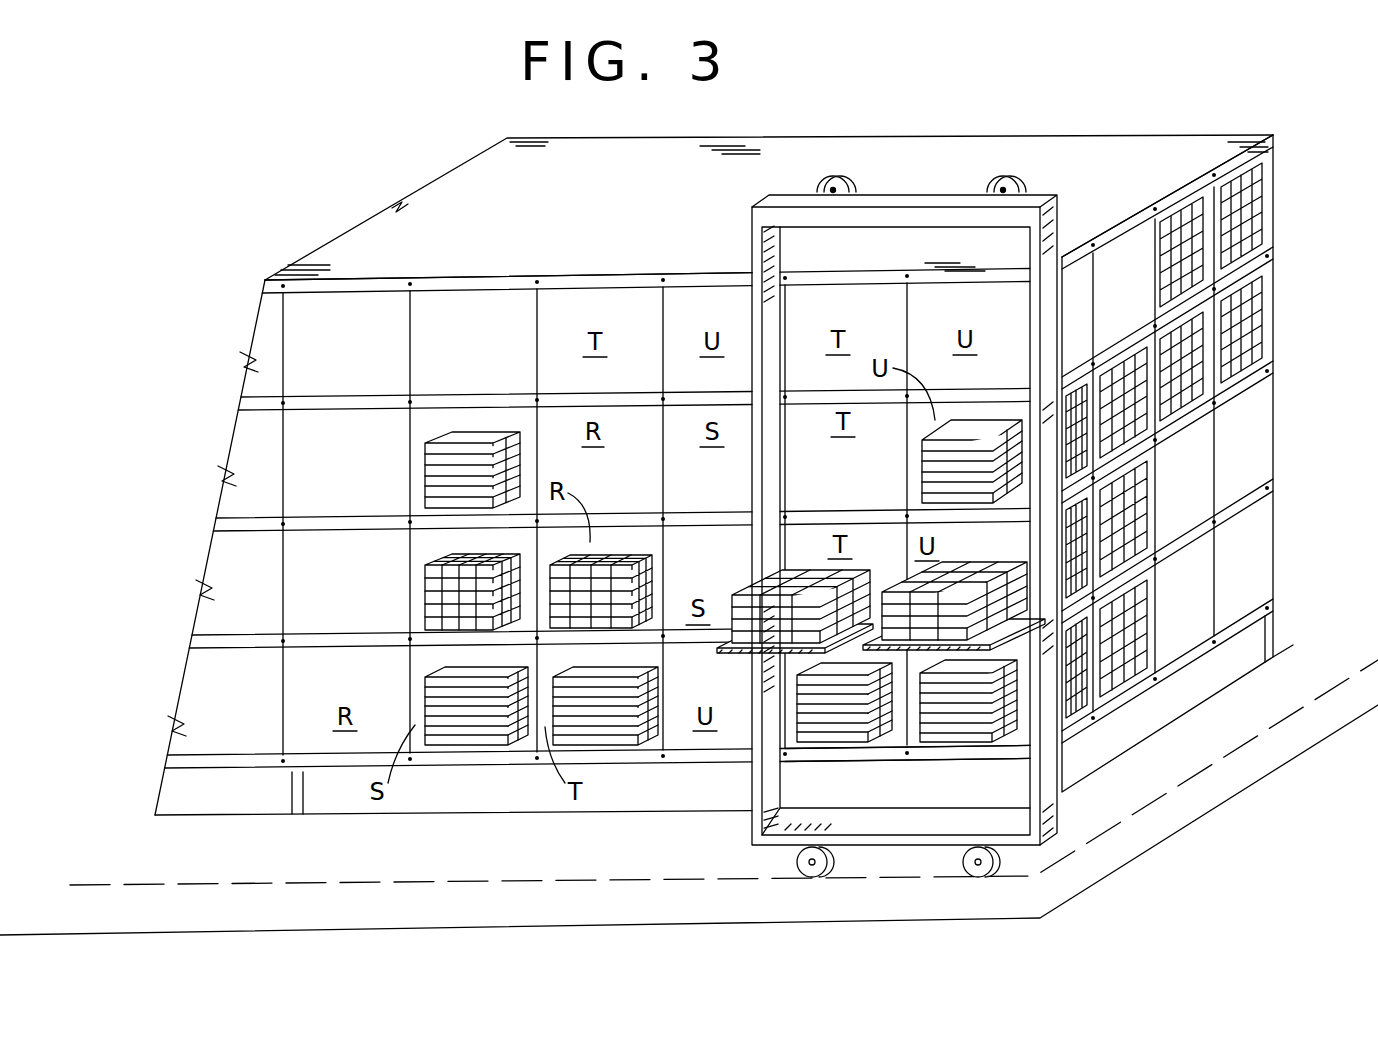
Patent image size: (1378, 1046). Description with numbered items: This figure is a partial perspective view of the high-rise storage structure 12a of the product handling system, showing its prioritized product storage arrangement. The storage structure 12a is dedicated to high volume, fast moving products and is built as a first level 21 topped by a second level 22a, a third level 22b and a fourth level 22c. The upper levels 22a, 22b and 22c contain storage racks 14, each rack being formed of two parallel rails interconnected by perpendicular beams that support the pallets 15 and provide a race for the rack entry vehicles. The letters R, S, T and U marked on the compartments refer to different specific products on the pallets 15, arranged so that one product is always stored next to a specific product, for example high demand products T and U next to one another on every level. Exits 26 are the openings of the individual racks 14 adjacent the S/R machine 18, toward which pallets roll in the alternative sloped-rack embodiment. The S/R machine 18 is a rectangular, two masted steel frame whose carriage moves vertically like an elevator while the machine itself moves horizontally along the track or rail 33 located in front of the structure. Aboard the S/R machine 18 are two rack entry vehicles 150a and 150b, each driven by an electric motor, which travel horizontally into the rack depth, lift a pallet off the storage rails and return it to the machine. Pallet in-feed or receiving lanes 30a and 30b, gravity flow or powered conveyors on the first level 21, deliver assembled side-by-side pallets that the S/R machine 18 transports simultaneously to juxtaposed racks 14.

The storage structure 12a is at (788, 138).
The storage rack 14 is at (615, 388).
The pallet 15 is at (432, 462).
The S/R machine 18 is at (750, 828).
The first level 21 is at (1272, 551).
The second level 22a is at (1266, 420).
The third level 22b is at (1270, 303).
The fourth level 22c is at (1270, 198).
The exit 26 is at (326, 370).
The pallet in-feed or receiving lane 30a is at (823, 748).
The pallet in-feed or receiving lane 30b is at (943, 745).
The track or rail 33 is at (430, 882).
The rack entry vehicle 150a is at (775, 652).
The rack entry vehicle 150b is at (905, 650).